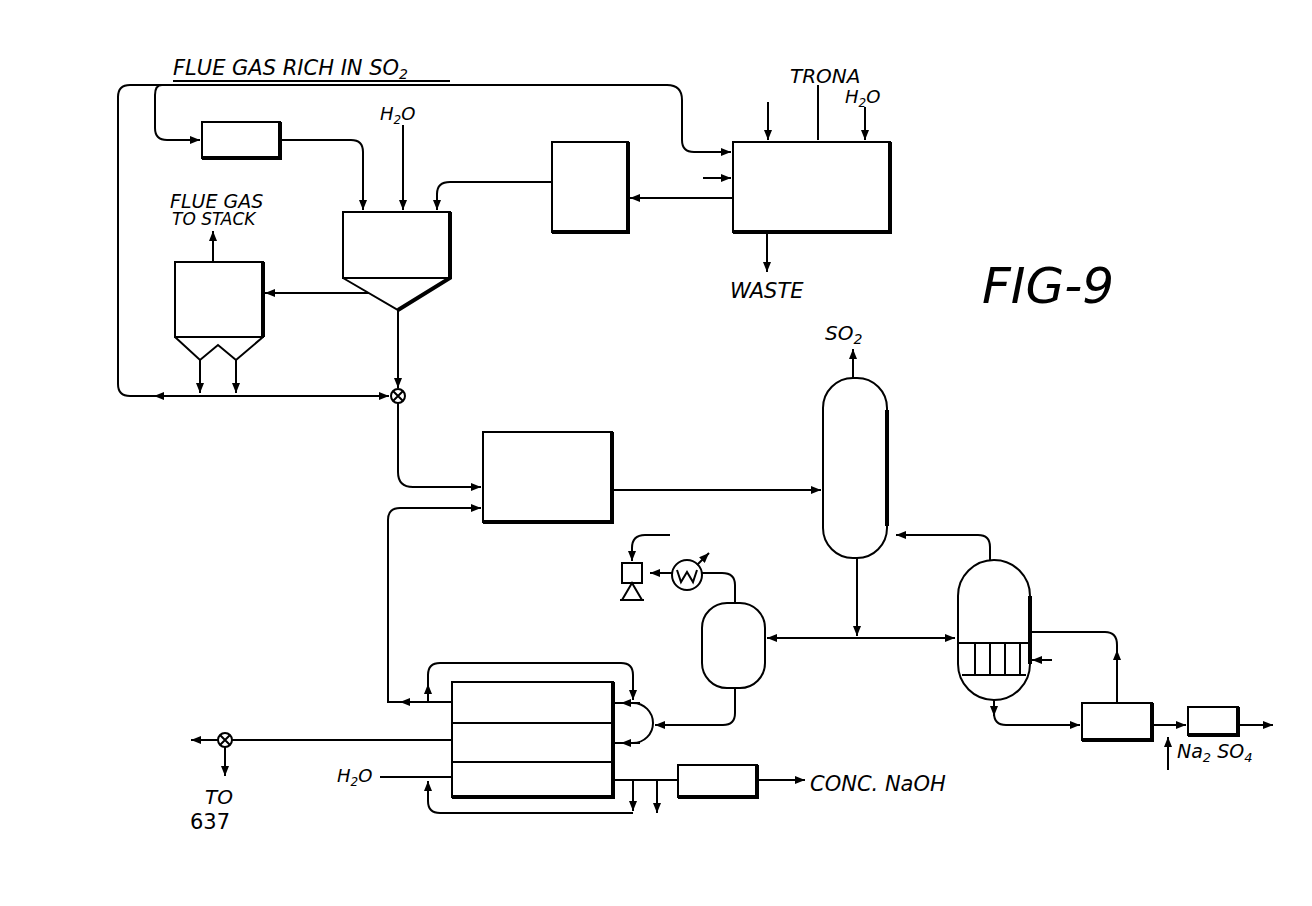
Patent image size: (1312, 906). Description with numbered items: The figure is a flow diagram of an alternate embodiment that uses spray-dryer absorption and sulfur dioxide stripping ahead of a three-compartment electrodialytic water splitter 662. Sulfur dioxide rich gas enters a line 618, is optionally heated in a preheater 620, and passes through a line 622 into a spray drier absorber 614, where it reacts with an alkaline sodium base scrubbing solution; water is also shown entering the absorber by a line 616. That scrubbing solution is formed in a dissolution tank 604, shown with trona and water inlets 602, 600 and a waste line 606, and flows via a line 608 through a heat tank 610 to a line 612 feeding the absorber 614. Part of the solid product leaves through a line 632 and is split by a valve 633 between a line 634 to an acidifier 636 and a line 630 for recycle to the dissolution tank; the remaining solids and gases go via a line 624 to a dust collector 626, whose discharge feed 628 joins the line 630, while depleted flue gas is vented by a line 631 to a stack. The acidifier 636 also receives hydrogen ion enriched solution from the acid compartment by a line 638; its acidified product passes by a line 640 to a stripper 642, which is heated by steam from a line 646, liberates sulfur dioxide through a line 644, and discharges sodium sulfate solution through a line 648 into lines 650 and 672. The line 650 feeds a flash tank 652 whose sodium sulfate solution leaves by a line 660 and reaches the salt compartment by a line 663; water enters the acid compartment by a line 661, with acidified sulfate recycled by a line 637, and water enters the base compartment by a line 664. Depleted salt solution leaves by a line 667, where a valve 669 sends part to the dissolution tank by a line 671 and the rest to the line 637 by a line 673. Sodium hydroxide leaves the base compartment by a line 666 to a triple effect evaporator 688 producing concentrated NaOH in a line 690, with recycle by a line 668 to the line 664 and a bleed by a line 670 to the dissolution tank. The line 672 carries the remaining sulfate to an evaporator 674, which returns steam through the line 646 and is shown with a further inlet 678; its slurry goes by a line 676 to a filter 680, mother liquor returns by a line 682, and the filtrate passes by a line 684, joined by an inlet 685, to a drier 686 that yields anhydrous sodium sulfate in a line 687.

The water inlet line to dissolver 600 is at (866, 118).
The trona/feed inlet line to dissolver 602 is at (818, 108).
The dissolution tank 604 is at (890, 198).
The waste outlet line 606 is at (768, 250).
The line 608 is at (658, 198).
The heat tank 610 is at (620, 232).
The line 612 is at (500, 180).
The spray drier absorber 614 is at (450, 250).
The water inlet line to SDA 616 is at (403, 160).
The line 618 is at (196, 144).
The preheater 620 is at (256, 122).
The line 622 is at (363, 176).
The line 624 is at (350, 295).
The dust collector 626 is at (175, 302).
The feed 628 is at (200, 364).
The line 630 is at (317, 398).
The line 631 is at (213, 248).
The line 632 is at (400, 338).
The valve 633 is at (408, 398).
The line 634 is at (440, 447).
The acidifier 636 is at (560, 432).
The line 637 is at (535, 663).
The line 638 is at (392, 548).
The line 640 is at (745, 490).
The stripper 642 is at (887, 465).
The line 644 is at (853, 360).
The line 646 is at (963, 535).
The line 648 is at (857, 612).
The line 650 is at (810, 638).
The flash tank 652 is at (765, 660).
The line 660 is at (705, 725).
The line 661 is at (668, 700).
The three compartment electrodialytic water splitter 662 is at (450, 732).
The line 663 is at (628, 745).
The line 664 is at (420, 785).
The line 666 is at (655, 780).
The line 667 is at (340, 728).
The line 668 is at (440, 813).
The valve 669 is at (232, 733).
The line 670 is at (660, 800).
The line 671 is at (212, 740).
The line 672 is at (930, 640).
The line 673 is at (228, 757).
The evaporator 674 is at (1060, 590).
The line 676 is at (1045, 725).
The crystallizer inlet 678 is at (1040, 660).
The filter 680 is at (1135, 742).
The line 682 is at (1117, 656).
The line 684 is at (1165, 722).
The inlet line 685 is at (1168, 760).
The drier 686 is at (1210, 707).
The line 687 is at (1252, 725).
The triple effect evaporator 688 is at (735, 765).
The line 690 is at (785, 778).